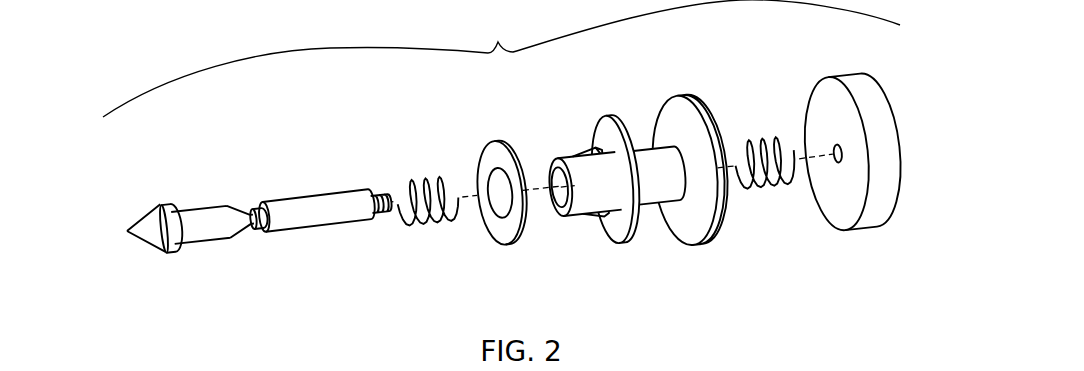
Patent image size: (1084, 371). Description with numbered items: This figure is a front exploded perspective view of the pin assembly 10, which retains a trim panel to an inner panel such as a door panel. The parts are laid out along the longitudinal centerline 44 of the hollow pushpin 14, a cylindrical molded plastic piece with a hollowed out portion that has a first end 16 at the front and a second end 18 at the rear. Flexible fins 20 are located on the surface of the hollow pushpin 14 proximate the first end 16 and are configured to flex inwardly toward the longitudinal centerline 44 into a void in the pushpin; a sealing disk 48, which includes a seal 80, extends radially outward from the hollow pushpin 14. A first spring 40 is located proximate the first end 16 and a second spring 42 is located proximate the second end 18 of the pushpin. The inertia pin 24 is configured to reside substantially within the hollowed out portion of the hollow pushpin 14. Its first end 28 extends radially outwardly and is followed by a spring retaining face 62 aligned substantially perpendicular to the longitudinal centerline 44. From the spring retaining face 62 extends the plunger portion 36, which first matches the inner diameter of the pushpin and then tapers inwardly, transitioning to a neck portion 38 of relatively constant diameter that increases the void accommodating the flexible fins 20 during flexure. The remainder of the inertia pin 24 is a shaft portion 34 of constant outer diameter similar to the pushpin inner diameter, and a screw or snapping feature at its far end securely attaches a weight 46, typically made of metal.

The pin assembly 10 is at (501, 58).
The hollow pushpin 14 is at (655, 210).
The first end 16 is at (560, 212).
The second end 18 is at (720, 90).
The flexible fin 20 is at (578, 151).
The inertia pin 24 is at (300, 195).
The first end 28 is at (128, 233).
The shaft portion 34 is at (333, 197).
The plunger portion 36 is at (205, 210).
The neck portion 38 is at (255, 222).
The first spring 40 is at (423, 183).
The second spring 42 is at (791, 141).
The longitudinal centerline 44 is at (822, 168).
The weight 46 is at (886, 197).
The sealing disk 48 is at (618, 117).
The spring retaining face 62 is at (180, 247).
The seal 80 is at (489, 152).